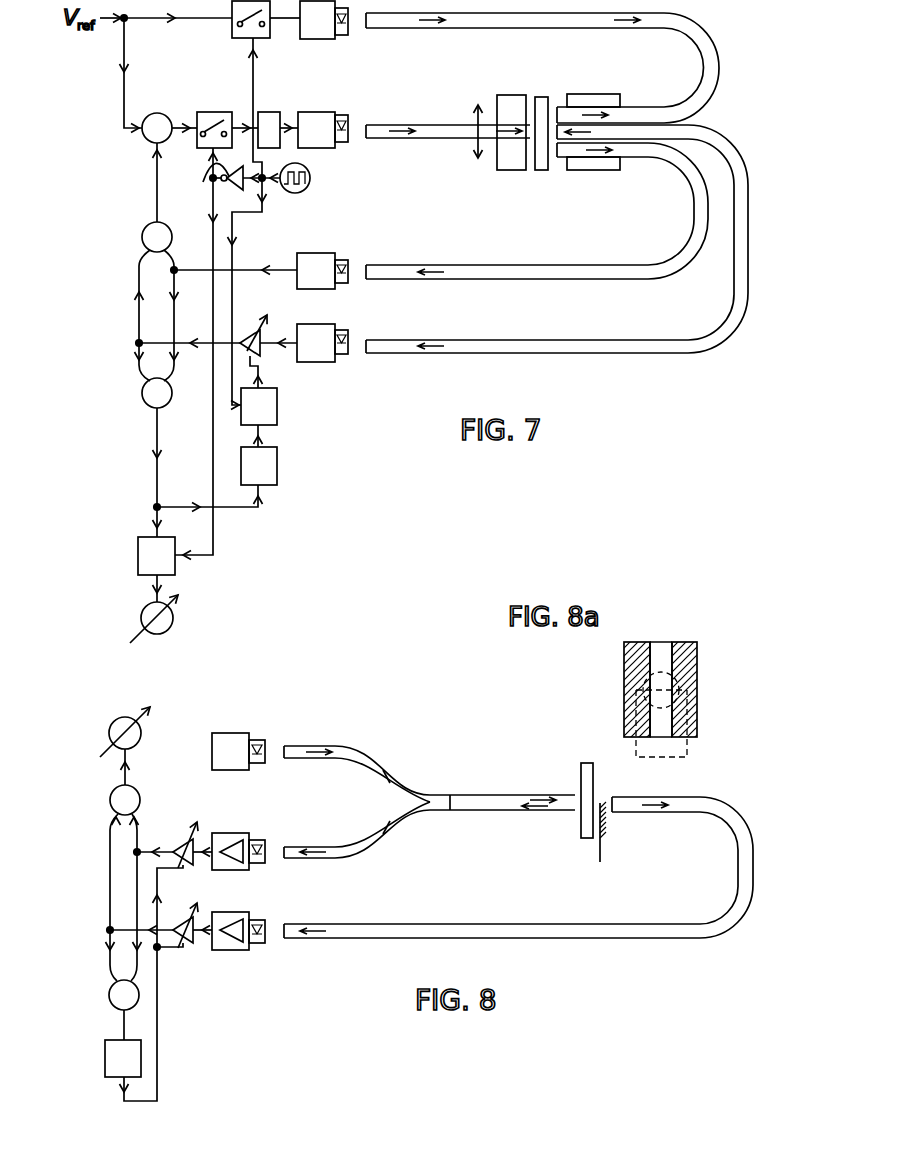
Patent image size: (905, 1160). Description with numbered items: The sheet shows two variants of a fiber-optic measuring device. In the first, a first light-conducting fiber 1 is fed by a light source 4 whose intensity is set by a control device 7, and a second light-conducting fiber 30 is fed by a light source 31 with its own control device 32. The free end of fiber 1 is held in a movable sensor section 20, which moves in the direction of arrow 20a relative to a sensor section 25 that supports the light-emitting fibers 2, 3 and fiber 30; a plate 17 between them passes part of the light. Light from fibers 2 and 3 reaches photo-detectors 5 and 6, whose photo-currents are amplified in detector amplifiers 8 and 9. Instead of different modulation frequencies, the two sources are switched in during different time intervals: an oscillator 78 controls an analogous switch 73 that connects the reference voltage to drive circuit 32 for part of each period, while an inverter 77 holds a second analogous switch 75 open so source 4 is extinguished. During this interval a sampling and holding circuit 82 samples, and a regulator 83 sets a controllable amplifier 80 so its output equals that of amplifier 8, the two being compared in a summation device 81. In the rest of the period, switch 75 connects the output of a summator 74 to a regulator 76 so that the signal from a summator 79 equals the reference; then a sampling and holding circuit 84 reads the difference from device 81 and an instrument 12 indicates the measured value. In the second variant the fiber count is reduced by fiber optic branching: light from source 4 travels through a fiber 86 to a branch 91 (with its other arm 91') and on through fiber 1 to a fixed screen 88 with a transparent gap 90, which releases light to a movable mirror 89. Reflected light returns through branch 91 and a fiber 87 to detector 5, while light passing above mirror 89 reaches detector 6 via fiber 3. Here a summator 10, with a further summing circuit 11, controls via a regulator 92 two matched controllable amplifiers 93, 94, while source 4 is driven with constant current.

In FIG. 7, the first light-conducting fiber 1 is at (400, 126).
In FIG. 8, the first light-conducting fiber 1 is at (476, 794).
In FIG. 8a, the first light-conducting fiber 1 is at (697, 678).
In FIG. 7, the light-emitting fiber 2 is at (522, 265).
In FIG. 7, the light-emitting fiber 3 is at (497, 340).
In FIG. 8, the light-emitting fiber 3 is at (468, 924).
In FIG. 8a, the light-emitting fiber 3 is at (673, 668).
In FIG. 7, the light source 4 is at (349, 126).
In FIG. 8, the light source 4 is at (266, 752).
In FIG. 7, the photo-detector 5 is at (348, 266).
In FIG. 8, the photo-detector 5 is at (266, 852).
In FIG. 7, the photo-detector 6 is at (349, 340).
In FIG. 8, the photo-detector 6 is at (266, 932).
In FIG. 7, the control device 7 is at (314, 112).
In FIG. 8, the control device 7 is at (232, 733).
In FIG. 7, the detector amplifier 8 is at (314, 253).
In FIG. 8, the detector amplifier 8 is at (232, 833).
In FIG. 7, the detector amplifier 9 is at (322, 324).
In FIG. 8, the detector amplifier 9 is at (228, 912).
In FIG. 8, the summator 10 is at (108, 976).
In FIG. 8, the summing circuit 11 is at (141, 802).
In FIG. 7, the instrument 12 is at (174, 616).
In FIG. 8, the instrument 12 is at (141, 736).
In FIG. 7, the plate 17 is at (541, 171).
In FIG. 7, the sensor section 20 is at (514, 95).
In FIG. 7, the arrow 20a is at (475, 142).
In FIG. 7, the sensor section 25 is at (592, 96).
In FIG. 7, the second light-conducting fiber 30 is at (698, 32).
In FIG. 7, the light source 31 is at (346, 36).
In FIG. 7, the control device 32 is at (300, 38).
In FIG. 7, the analogous switch 73 is at (232, 32).
In FIG. 7, the summator 74 is at (152, 113).
In FIG. 7, the second analogous switch 75 is at (218, 112).
In FIG. 7, the regulator 76 is at (270, 109).
In FIG. 7, the inverter 77 is at (212, 179).
In FIG. 7, the oscillator 78 is at (310, 178).
In FIG. 7, the summator 79 is at (148, 224).
In FIG. 7, the controllable amplifier 80 is at (250, 328).
In FIG. 7, the summation device 81 is at (144, 406).
In FIG. 7, the sampling and holding circuit 82 is at (277, 410).
In FIG. 7, the regulator 83 is at (277, 467).
In FIG. 7, the sampling and holding circuit 84 is at (141, 537).
In FIG. 8, the fiber 86 is at (334, 746).
In FIG. 8, the fiber 87 is at (345, 859).
In FIG. 8, the fixed screen 88 is at (580, 775).
In FIG. 8a, the fixed screen 88 is at (623, 650).
In FIG. 8, the movable mirror 89 is at (600, 855).
In FIG. 8a, the movable mirror 89 is at (688, 753).
In FIG. 8a, the transparent gap 90 is at (656, 657).
In FIG. 8, the branch 91 is at (416, 761).
In FIG. 8, the coupler branch 91' is at (420, 835).
In FIG. 8, the regulator 92 is at (105, 1052).
In FIG. 8, the controllable amplifier 93 is at (183, 945).
In FIG. 8, the controllable amplifier 94 is at (185, 867).